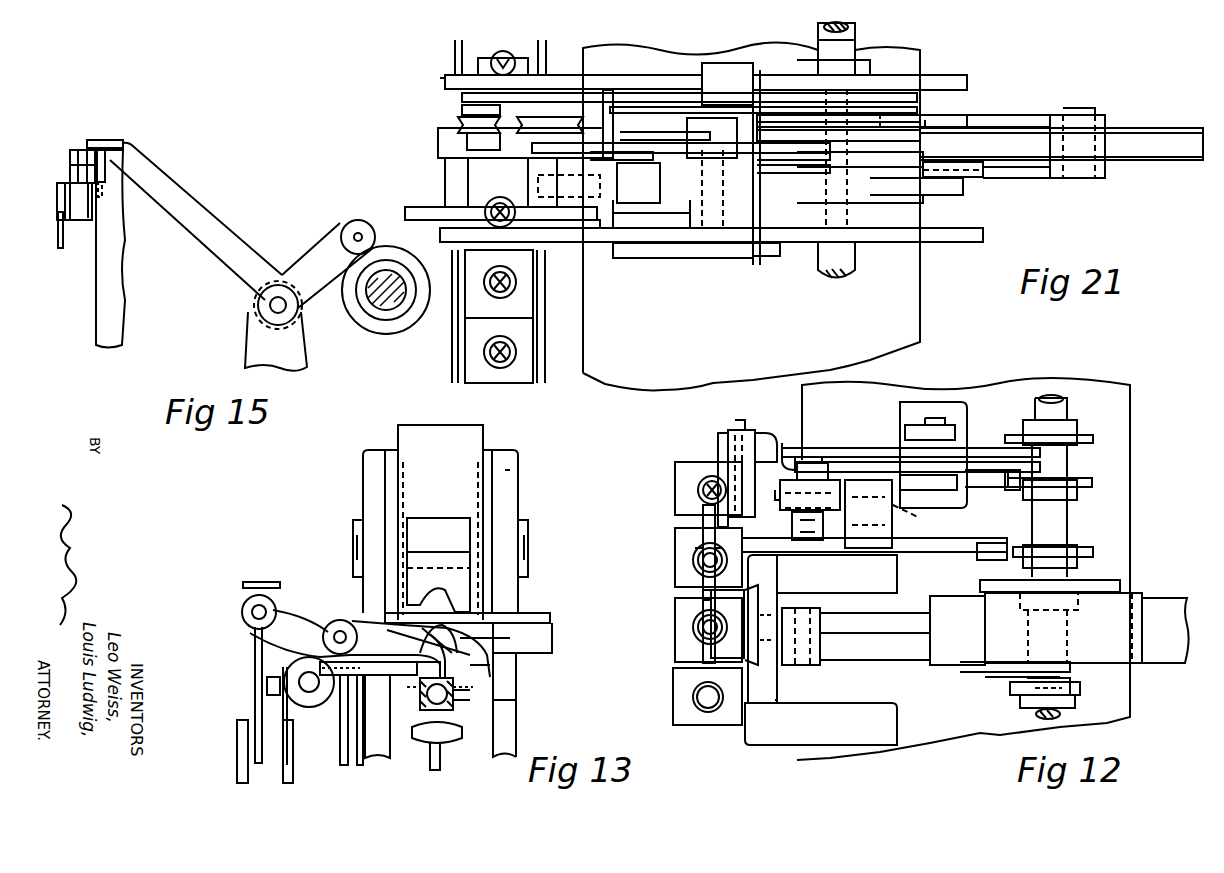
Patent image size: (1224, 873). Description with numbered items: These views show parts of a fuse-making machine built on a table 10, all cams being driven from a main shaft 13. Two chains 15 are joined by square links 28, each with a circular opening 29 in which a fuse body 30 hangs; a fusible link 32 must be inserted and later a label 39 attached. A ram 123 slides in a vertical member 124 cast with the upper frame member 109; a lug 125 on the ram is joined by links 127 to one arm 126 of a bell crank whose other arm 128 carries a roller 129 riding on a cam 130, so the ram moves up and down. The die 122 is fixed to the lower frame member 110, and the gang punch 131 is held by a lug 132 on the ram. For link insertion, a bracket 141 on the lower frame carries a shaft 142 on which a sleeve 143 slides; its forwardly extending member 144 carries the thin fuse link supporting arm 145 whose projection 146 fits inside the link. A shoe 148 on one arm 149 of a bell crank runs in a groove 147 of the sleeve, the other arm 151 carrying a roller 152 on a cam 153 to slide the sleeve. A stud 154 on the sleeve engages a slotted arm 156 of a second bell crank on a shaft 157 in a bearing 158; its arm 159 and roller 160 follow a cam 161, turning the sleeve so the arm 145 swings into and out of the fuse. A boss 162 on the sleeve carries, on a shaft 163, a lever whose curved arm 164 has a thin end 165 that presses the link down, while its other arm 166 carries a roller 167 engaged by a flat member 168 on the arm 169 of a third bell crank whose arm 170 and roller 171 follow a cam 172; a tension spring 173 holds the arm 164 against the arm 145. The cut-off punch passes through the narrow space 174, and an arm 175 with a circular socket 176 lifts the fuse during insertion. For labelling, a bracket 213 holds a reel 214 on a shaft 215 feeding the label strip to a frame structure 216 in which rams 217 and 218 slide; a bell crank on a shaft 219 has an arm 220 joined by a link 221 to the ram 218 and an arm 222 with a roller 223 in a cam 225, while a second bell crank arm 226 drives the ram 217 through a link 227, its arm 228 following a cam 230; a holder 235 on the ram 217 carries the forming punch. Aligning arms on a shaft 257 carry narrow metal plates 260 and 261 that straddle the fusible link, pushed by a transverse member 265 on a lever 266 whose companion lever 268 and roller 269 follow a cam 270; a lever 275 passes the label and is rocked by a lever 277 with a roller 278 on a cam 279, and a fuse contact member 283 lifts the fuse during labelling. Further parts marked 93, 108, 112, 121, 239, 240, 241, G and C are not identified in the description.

In FIG. 21, the table 10 is at (751, 216).
In FIG. 12, the table 10 is at (1130, 413).
In FIG. 21, the main shaft 13 is at (836, 260).
In FIG. 15, the main shaft 13 is at (372, 306).
In FIG. 12, the main shaft 13 is at (1050, 486).
In FIG. 21, the chains 15 is at (458, 385).
In FIG. 21, the square links 28 is at (525, 342).
In FIG. 12, the square links 28 is at (680, 470).
In FIG. 13, the circular opening 29 is at (445, 677).
In FIG. 21, the fuse bodies 30 is at (484, 348).
In FIG. 15, the fuse bodies 30 is at (410, 322).
In FIG. 13, the fuse bodies 30 is at (453, 705).
In FIG. 12, the fuse bodies 30 is at (700, 712).
In FIG. 21, the fusible link 32 is at (488, 223).
In FIG. 13, the fusible link 32 is at (470, 690).
In FIG. 12, the fusible link 32 is at (698, 492).
In FIG. 21, the label 39 is at (505, 52).
In FIG. 12, the block 93 is at (1087, 628).
In FIG. 13, the pin 108 is at (528, 544).
In FIG. 12, the pin 108 is at (960, 600).
In FIG. 12, the upper frame member 109 is at (821, 650).
In FIG. 15, the lower frame member 110 is at (125, 274).
In FIG. 13, the lower frame member 110 is at (500, 757).
In FIG. 12, the plate 112 is at (1123, 585).
In FIG. 13, the plate 121 is at (485, 620).
In FIG. 13, the die 122 is at (510, 640).
In FIG. 13, the ram 123 is at (440, 522).
In FIG. 12, the ram 123 is at (760, 656).
In FIG. 13, the vertical member 124 is at (363, 487).
In FIG. 12, the vertical member 124 is at (762, 629).
In FIG. 12, the lug 125 is at (812, 624).
In FIG. 12, the arm 126 is at (876, 634).
In FIG. 12, the links 127 is at (822, 612).
In FIG. 12, the arm 128 is at (1000, 678).
In FIG. 12, the roller 129 is at (1070, 688).
In FIG. 12, the cam 130 is at (1075, 700).
In FIG. 13, the gang punch 131 is at (460, 582).
In FIG. 13, the lug 132 is at (438, 565).
In FIG. 12, the lug 132 is at (727, 624).
In FIG. 12, the bracket 141 is at (868, 514).
In FIG. 13, the shaft 142 is at (310, 662).
In FIG. 12, the shaft 142 is at (922, 519).
In FIG. 13, the sleeve 143 is at (311, 708).
In FIG. 12, the sleeve 143 is at (848, 480).
In FIG. 12, the forwardly extending member 144 is at (772, 505).
In FIG. 13, the fuse link supporting arm 145 is at (400, 700).
In FIG. 12, the fuse link supporting arm 145 is at (703, 605).
In FIG. 13, the projection 146 is at (470, 700).
In FIG. 12, the groove 147 is at (826, 463).
In FIG. 13, the shoe 148 is at (341, 752).
In FIG. 12, the shoe 148 is at (723, 436).
In FIG. 13, the arm 149 is at (358, 766).
In FIG. 12, the arm 149 is at (792, 528).
In FIG. 12, the arm 151 is at (966, 538).
In FIG. 12, the roller 152 is at (998, 543).
In FIG. 12, the cam 153 is at (1093, 552).
In FIG. 12, the stud 154 is at (788, 442).
In FIG. 13, the arm 156 is at (270, 707).
In FIG. 12, the arm 156 is at (900, 430).
In FIG. 15, the shaft 157 is at (268, 310).
In FIG. 12, the shaft 157 is at (945, 425).
In FIG. 15, the bearing 158 is at (276, 341).
In FIG. 13, the bearing 158 is at (240, 770).
In FIG. 12, the bearing 158 is at (926, 418).
In FIG. 12, the arm 159 is at (985, 483).
In FIG. 12, the roller 160 is at (1013, 492).
In FIG. 12, the cam 161 is at (1092, 483).
In FIG. 12, the boss 162 is at (703, 535).
In FIG. 13, the shaft 163 is at (342, 619).
In FIG. 15, the arm 164 is at (78, 226).
In FIG. 13, the arm 164 is at (420, 649).
In FIG. 12, the arm 164 is at (703, 557).
In FIG. 15, the thin end 165 is at (61, 250).
In FIG. 13, the thin end 165 is at (480, 665).
In FIG. 12, the thin end 165 is at (703, 645).
In FIG. 15, the arm 166 is at (74, 158).
In FIG. 13, the arm 166 is at (300, 633).
In FIG. 12, the arm 166 is at (722, 476).
In FIG. 15, the roller 167 is at (120, 165).
In FIG. 13, the roller 167 is at (241, 611).
In FIG. 12, the roller 167 is at (741, 430).
In FIG. 15, the flat member 168 is at (110, 140).
In FIG. 13, the flat member 168 is at (260, 582).
In FIG. 15, the arm 169 is at (212, 240).
In FIG. 13, the arm 169 is at (255, 663).
In FIG. 12, the arm 169 is at (812, 446).
In FIG. 15, the arm 170 is at (327, 265).
In FIG. 12, the arm 170 is at (985, 462).
In FIG. 15, the roller 171 is at (359, 220).
In FIG. 12, the roller 171 is at (1036, 433).
In FIG. 15, the cam 172 is at (380, 322).
In FIG. 12, the cam 172 is at (1093, 440).
In FIG. 13, the tension spring 173 is at (380, 676).
In FIG. 12, the tension spring 173 is at (703, 593).
In FIG. 12, the narrow space 174 is at (698, 630).
In FIG. 13, the arm 175 is at (440, 768).
In FIG. 13, the circular socket 176 is at (452, 738).
In FIG. 21, the bracket 213 is at (1030, 115).
In FIG. 21, the reel 214 is at (1150, 129).
In FIG. 21, the shaft 215 is at (1085, 108).
In FIG. 21, the frame structure 216 is at (672, 76).
In FIG. 21, the ram 217 is at (479, 125).
In FIG. 21, the ram 218 is at (550, 125).
In FIG. 21, the shaft 219 is at (712, 62).
In FIG. 21, the arm 220 is at (610, 150).
In FIG. 21, the link 221 is at (533, 136).
In FIG. 21, the arm 222 is at (778, 106).
In FIG. 21, the roller 223 is at (930, 112).
In FIG. 21, the cam 225 is at (965, 121).
In FIG. 21, the arm 226 is at (562, 95).
In FIG. 21, the link 227 is at (462, 112).
In FIG. 21, the arm 228 is at (817, 40).
In FIG. 21, the cam 230 is at (950, 77).
In FIG. 21, the holder 235 is at (483, 141).
In FIG. 21, the shaft 239 is at (897, 68).
In FIG. 21, the rod 240 is at (700, 176).
In FIG. 21, the bar 241 is at (975, 178).
In FIG. 21, the shaft 257 is at (445, 173).
In FIG. 21, the narrow metal plate 260 is at (440, 216).
In FIG. 21, the narrow metal plate 261 is at (578, 243).
In FIG. 21, the transverse member 265 is at (525, 182).
In FIG. 21, the lever 266 is at (575, 178).
In FIG. 21, the lever 268 is at (672, 258).
In FIG. 21, the roller 269 is at (765, 247).
In FIG. 21, the cam 270 is at (950, 244).
In FIG. 21, the lever 275 is at (596, 154).
In FIG. 21, the lever 277 is at (651, 213).
In FIG. 21, the roller 278 is at (738, 197).
In FIG. 21, the cam 279 is at (922, 207).
In FIG. 21, the fuse contact member 283 is at (438, 146).
In FIG. 21, the gear unit G is at (445, 78).
In FIG. 13, the carriage C is at (505, 470).
In FIG. 12, the carriage C is at (775, 700).